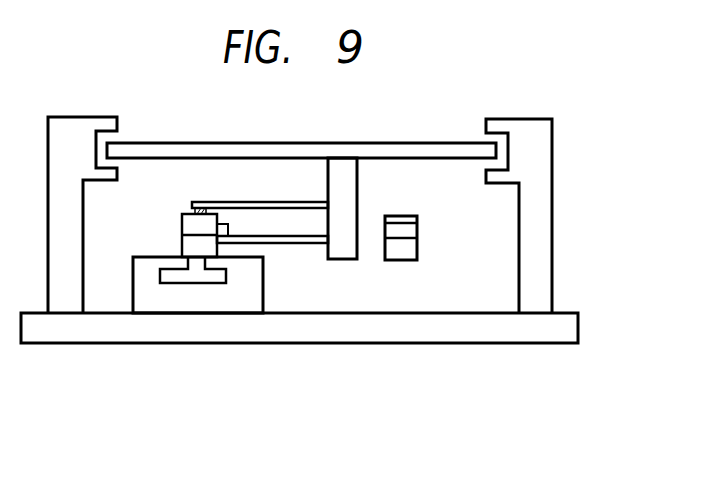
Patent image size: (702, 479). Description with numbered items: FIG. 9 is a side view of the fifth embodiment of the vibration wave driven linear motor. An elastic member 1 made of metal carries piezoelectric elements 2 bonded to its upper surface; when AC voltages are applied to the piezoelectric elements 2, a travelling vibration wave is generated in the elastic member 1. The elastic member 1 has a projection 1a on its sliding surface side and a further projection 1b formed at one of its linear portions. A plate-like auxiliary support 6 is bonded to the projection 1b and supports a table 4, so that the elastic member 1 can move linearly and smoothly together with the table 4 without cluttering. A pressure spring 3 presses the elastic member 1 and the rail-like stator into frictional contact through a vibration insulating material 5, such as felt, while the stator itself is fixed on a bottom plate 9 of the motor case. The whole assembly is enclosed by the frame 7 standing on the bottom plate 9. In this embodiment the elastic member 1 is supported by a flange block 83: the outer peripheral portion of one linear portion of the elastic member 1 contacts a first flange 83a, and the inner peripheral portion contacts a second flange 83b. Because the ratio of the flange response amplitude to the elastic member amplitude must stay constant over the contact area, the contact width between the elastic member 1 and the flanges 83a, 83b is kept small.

The elastic member 1 is at (433, 226).
The projection 1a is at (412, 248).
The projection 1b is at (228, 224).
The piezoelectric elements 2 is at (402, 215).
The pressure spring 3 is at (273, 203).
The table 4 is at (392, 152).
The vibration insulating material 5 is at (193, 209).
The plate-like auxiliary support 6 is at (290, 243).
The frame 7 is at (543, 156).
The bottom plate 9 is at (478, 333).
The support block 83 is at (194, 329).
The first flange 83a is at (174, 262).
The second flange 83b is at (217, 267).